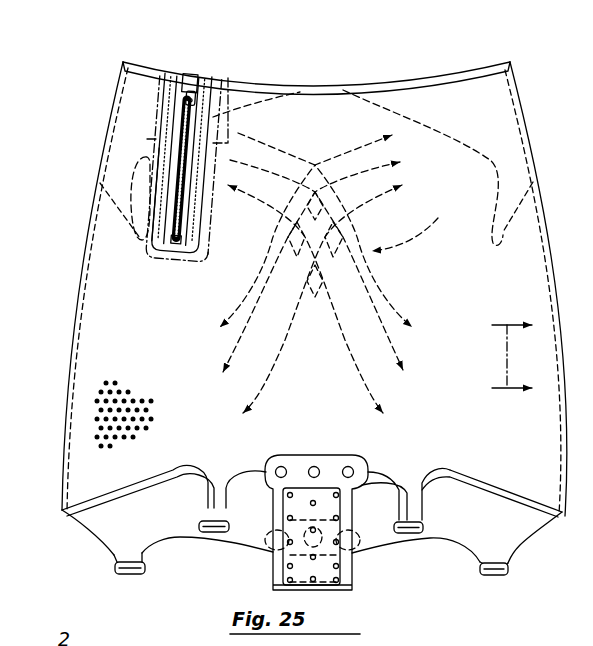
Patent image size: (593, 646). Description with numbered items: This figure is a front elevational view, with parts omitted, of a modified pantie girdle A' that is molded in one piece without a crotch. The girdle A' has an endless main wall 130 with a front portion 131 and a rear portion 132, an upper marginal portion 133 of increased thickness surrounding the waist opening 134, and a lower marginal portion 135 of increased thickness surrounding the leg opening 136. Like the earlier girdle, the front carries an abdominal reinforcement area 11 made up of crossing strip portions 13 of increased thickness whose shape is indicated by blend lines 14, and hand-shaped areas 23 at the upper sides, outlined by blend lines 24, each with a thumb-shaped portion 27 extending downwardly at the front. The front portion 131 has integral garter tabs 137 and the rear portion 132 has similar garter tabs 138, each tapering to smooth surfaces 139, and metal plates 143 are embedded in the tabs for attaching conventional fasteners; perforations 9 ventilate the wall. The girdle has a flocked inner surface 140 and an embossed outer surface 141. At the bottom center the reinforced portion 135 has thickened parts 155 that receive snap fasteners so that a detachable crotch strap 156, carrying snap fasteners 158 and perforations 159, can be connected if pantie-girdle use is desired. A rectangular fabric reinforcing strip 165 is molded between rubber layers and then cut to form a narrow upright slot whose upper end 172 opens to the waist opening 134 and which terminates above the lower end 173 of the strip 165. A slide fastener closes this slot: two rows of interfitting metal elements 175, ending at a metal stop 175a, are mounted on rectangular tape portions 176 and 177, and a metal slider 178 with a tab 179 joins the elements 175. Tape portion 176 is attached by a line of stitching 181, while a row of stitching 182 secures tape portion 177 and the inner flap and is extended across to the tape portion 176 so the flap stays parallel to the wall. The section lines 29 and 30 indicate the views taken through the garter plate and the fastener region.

The girdle A' is at (75, 48).
The perforations 9 is at (142, 408).
The abdominal reinforcement area 11 is at (337, 266).
The crossing strip portions 13 is at (263, 337).
The blend lines 14 is at (350, 140).
The hand-shaped areas 23 is at (118, 115).
The blend lines 24 is at (493, 163).
The thumb-shaped portion 27 is at (122, 217).
The section line 29- 29 is at (511, 358).
The section line 30- 30 is at (235, 72).
The main wall 130 is at (85, 299).
The front portion 131 is at (170, 453).
The rear portion 132 is at (248, 540).
The upper marginal portion 133 is at (385, 83).
The waist opening 134 is at (460, 72).
The lower marginal portion 135 is at (470, 479).
The leg opening 136 is at (523, 528).
The garter tabs 137 is at (208, 505).
The garter tabs 138 is at (112, 552).
The tapered surfaces 139 is at (410, 494).
The flocked inner surface 140 is at (97, 513).
The embossed outer surface 141 is at (440, 276).
The metal plates 143 is at (205, 521).
The thickened parts 155 is at (338, 455).
The crotch strap 156 is at (355, 581).
The snap fasteners 158 is at (313, 463).
The perforations 159 is at (287, 568).
The fabric reinforcing strip 165 is at (201, 251).
The upper end of the slot 172 is at (191, 73).
The lower end of the strip 173 is at (166, 263).
The interfitting metal elements 175 is at (184, 222).
The metal stop 175a is at (180, 246).
The tape portion 176 is at (186, 100).
The tape portion 177 is at (208, 175).
The metal slider 178 is at (178, 73).
The tab 179 is at (162, 92).
The line of stitching 181 is at (160, 193).
The row of stitching 182 is at (196, 200).